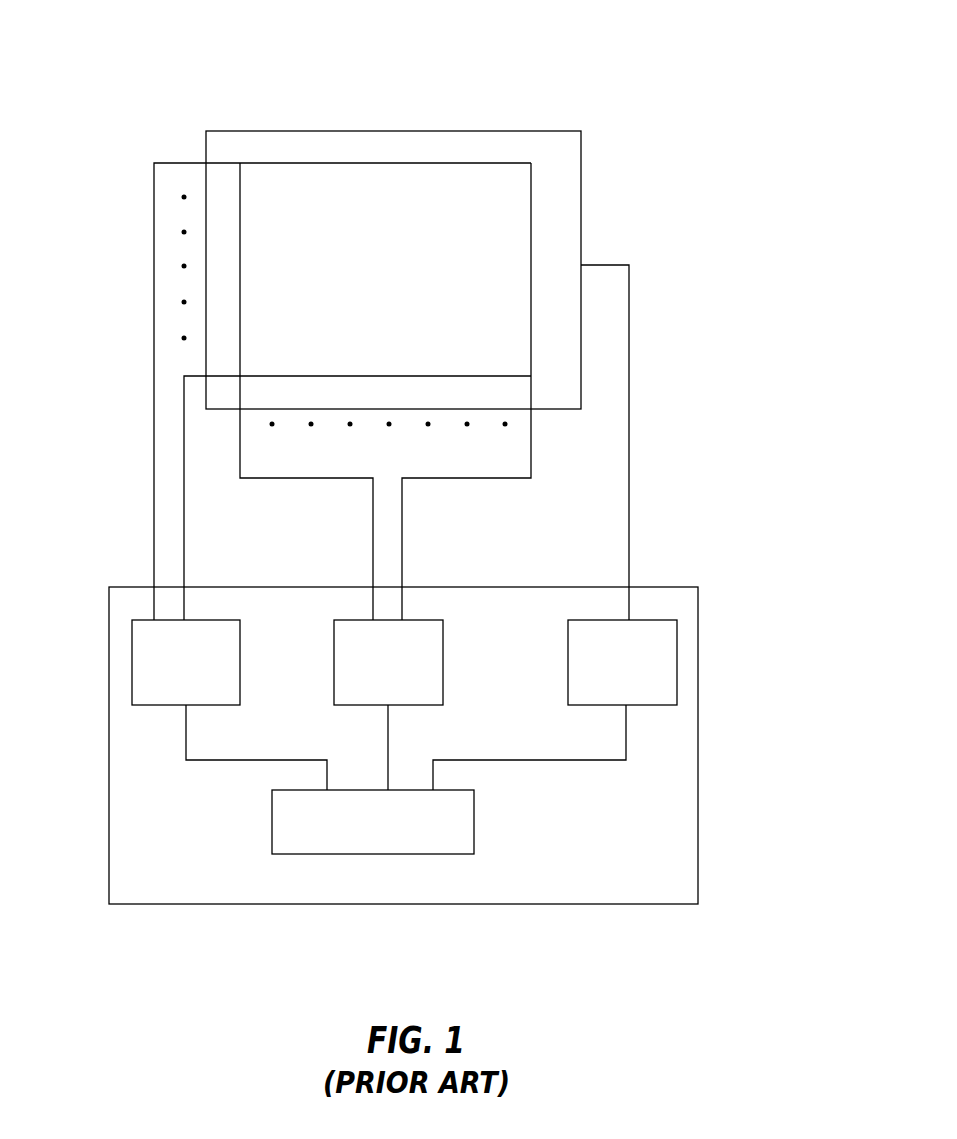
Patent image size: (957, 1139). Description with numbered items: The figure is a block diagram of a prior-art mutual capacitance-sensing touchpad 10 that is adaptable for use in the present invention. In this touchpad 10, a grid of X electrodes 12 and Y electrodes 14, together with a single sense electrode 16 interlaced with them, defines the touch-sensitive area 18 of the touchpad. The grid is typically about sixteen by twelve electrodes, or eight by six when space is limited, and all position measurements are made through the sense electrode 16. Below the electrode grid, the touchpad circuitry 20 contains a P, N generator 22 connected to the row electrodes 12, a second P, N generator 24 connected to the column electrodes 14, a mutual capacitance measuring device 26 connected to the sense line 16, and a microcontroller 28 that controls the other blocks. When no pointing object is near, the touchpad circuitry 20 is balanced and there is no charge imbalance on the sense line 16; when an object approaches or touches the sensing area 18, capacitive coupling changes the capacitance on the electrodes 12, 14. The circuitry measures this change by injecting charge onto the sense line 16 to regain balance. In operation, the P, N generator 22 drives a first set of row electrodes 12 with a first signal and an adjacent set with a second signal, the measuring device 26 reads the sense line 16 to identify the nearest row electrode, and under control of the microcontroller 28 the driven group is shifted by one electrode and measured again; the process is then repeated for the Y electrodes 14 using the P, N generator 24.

The touchpad 10 is at (553, 98).
The X electrodes 12 is at (170, 360).
The Y electrodes 14 is at (545, 498).
The sense electrode 16 is at (630, 293).
The touch-sensitive area 18 is at (721, 118).
The touchpad circuitry 20 is at (701, 762).
The P, N generator 22 is at (132, 660).
The P, N generator 24 is at (443, 648).
The mutual capacitance measuring device 26 is at (568, 668).
The microcontroller 28 is at (474, 820).